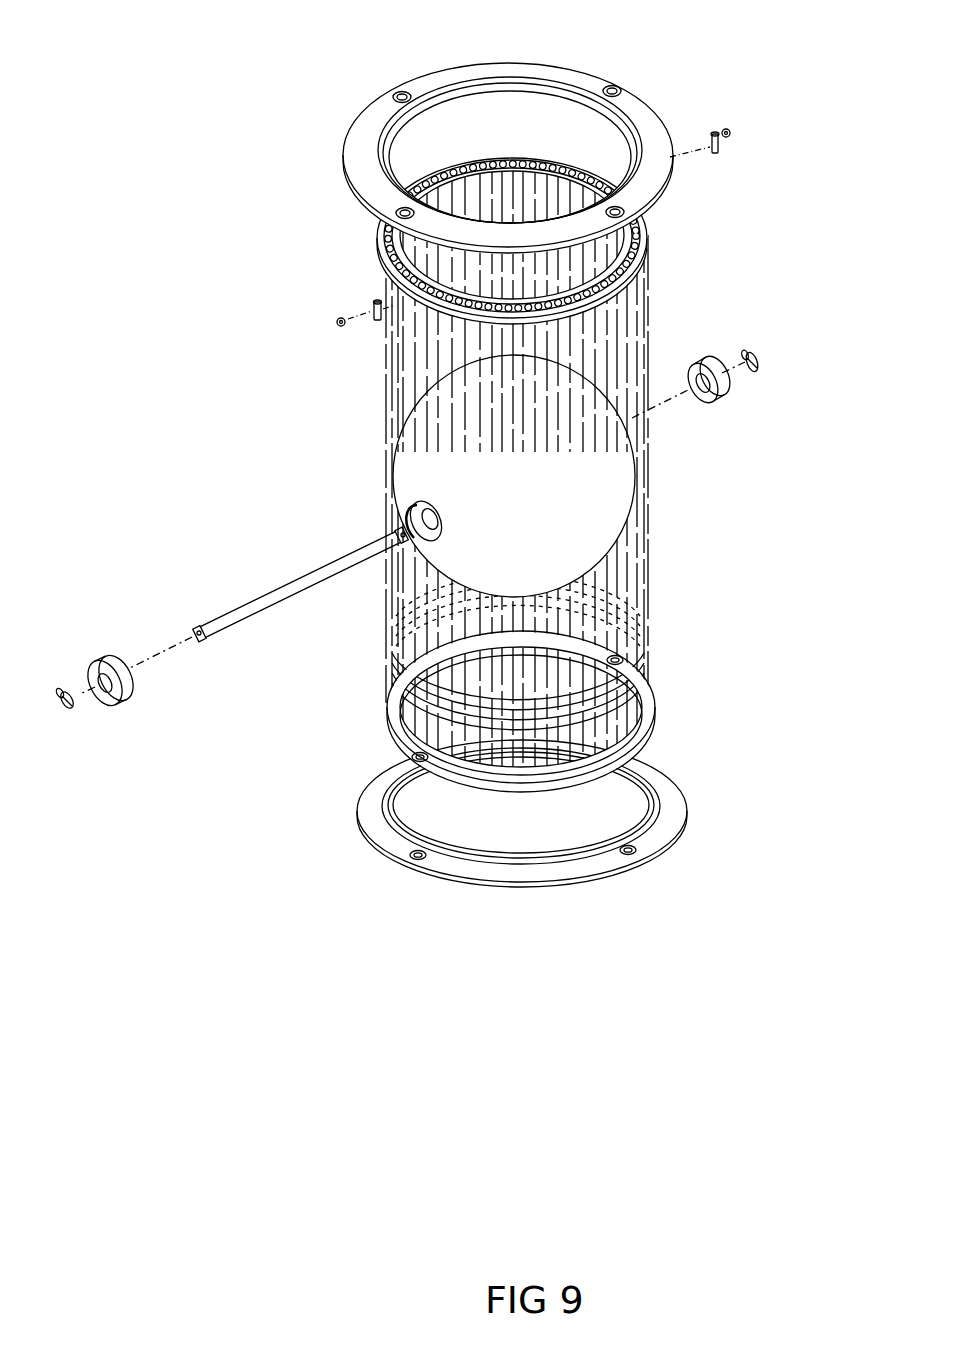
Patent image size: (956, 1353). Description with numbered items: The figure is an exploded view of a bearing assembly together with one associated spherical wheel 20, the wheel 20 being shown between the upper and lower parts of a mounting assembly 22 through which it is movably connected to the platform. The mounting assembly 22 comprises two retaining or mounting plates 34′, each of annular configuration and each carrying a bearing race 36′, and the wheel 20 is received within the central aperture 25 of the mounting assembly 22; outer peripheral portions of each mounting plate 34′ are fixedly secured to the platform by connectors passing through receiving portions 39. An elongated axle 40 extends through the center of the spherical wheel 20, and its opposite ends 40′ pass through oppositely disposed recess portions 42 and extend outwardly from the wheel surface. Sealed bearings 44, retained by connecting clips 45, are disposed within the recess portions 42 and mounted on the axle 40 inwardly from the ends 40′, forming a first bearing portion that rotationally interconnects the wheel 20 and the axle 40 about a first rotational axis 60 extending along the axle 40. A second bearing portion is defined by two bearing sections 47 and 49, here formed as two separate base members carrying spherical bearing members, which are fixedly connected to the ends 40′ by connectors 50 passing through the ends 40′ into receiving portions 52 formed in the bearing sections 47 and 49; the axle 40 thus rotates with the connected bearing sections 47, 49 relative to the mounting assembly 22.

The spherical wheel 20 is at (634, 498).
The mounting assembly 22 is at (565, 456).
The central aperture 25 is at (510, 457).
The retaining or mounting plate 34′ is at (547, 453).
The bearing race 36′ is at (642, 772).
The receiving portions 39 is at (400, 90).
The elongated axle 40 is at (301, 591).
The axle ends 40′ is at (398, 532).
The recess portions 42 is at (440, 545).
The bearings 44 is at (126, 700).
The connecting clips 45 is at (76, 710).
The first bearing section 47 is at (568, 241).
The second bearing section 49 is at (534, 722).
The connectors 50 is at (372, 318).
The receiving portions 52 is at (418, 762).
The first rotational axis 60 is at (140, 662).